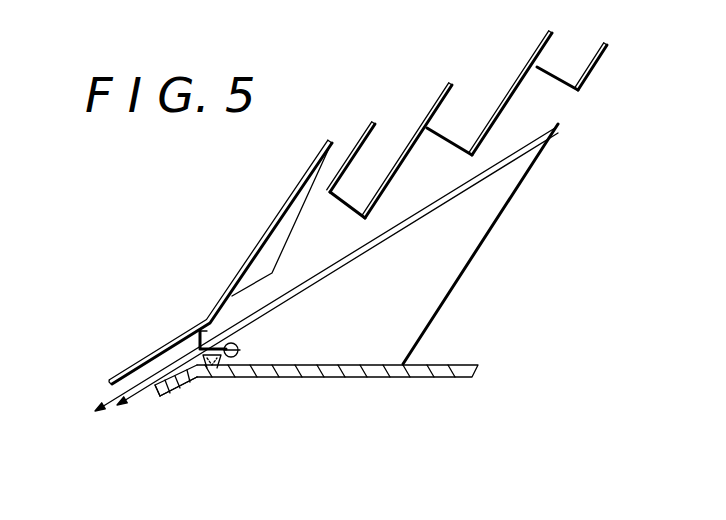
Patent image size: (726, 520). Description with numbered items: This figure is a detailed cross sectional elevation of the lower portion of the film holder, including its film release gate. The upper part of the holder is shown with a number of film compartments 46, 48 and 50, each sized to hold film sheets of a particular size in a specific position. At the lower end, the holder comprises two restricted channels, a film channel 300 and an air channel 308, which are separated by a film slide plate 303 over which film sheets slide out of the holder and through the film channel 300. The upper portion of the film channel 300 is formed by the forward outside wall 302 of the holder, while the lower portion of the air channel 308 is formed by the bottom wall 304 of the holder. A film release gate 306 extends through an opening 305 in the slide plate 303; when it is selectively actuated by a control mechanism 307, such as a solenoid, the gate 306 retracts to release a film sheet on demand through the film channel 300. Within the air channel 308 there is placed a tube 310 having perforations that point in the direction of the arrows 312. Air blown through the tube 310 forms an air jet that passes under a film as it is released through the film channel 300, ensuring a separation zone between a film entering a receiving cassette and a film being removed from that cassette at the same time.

The film compartment 46 is at (395, 122).
The film compartment 48 is at (473, 105).
The film compartment 50 is at (575, 40).
The film channel 300 is at (133, 366).
The forward outside wall 302 is at (167, 341).
The film slide plate 303 is at (297, 286).
The bottom wall 304 is at (184, 378).
The opening 305 is at (193, 331).
The film release gate 306 is at (206, 368).
The control mechanism 307 is at (240, 345).
The air channel 308 is at (188, 382).
The tube 310 is at (162, 392).
The arrows 312 is at (96, 432).